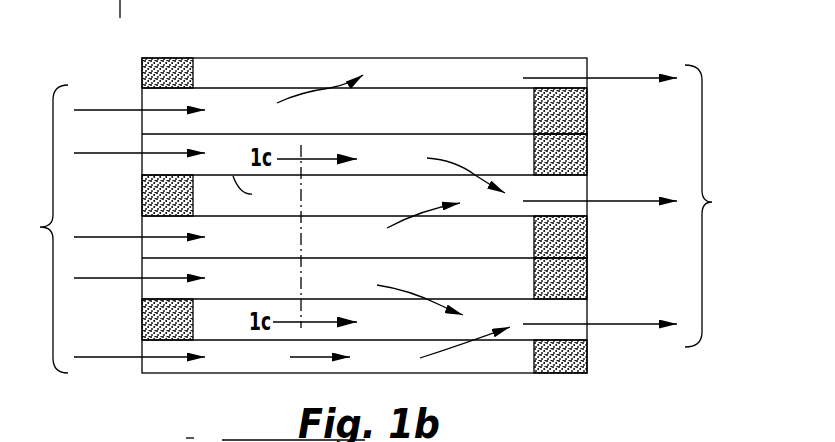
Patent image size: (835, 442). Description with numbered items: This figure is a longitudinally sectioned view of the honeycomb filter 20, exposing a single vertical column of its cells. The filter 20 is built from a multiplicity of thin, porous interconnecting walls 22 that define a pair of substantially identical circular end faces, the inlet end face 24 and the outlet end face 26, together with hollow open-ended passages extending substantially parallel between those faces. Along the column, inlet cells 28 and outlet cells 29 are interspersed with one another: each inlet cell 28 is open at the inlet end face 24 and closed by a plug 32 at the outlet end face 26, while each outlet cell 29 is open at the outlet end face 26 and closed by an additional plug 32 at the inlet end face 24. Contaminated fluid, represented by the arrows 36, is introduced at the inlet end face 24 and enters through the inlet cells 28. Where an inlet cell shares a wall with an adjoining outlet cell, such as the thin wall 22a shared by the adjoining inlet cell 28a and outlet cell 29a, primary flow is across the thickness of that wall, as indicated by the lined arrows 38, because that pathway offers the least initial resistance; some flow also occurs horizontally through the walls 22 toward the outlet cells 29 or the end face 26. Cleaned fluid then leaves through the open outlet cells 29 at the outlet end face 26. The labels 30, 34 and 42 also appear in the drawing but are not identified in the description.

The filter 20 is at (198, 373).
The thin porous interconnecting walls 22 is at (523, 303).
The thin wall 22a is at (380, 216).
The inlet end face 24 is at (140, 163).
The outlet end face 26 is at (587, 237).
The inlet cells 28 is at (348, 292).
The inlet cell 28a is at (350, 250).
The outlet cells 29 is at (410, 329).
The outlet cell 29a is at (352, 213).
The plate stack 30 is at (238, 58).
The plugs 32 is at (172, 58).
The channel opening 34 is at (210, 198).
The arrows 36 is at (40, 229).
The lined arrows 38 is at (323, 83).
The outlet fluid streams 42 is at (633, 206).